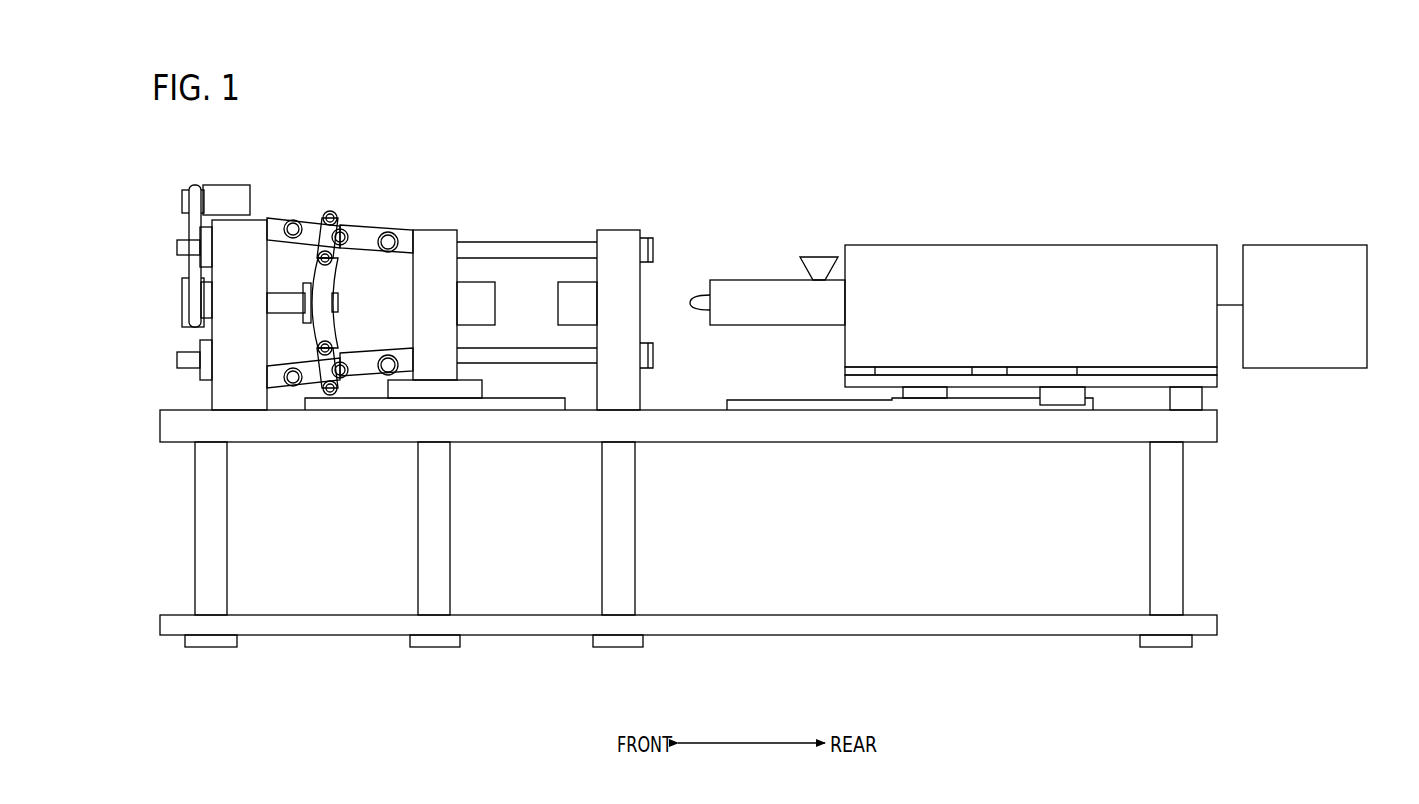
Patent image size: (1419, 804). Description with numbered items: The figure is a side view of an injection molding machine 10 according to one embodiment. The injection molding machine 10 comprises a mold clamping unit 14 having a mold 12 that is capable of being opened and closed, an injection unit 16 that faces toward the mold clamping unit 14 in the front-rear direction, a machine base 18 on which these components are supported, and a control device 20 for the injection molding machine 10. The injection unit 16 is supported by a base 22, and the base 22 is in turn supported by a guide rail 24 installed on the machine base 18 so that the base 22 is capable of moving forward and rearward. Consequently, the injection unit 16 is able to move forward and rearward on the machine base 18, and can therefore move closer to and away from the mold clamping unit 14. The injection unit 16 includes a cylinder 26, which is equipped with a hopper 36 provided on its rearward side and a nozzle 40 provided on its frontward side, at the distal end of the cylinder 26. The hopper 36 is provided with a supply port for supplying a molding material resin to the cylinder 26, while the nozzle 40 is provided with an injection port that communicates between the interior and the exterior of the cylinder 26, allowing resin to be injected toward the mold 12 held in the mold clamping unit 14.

The injection molding machine 10 is at (395, 131).
The mold 12 is at (485, 305).
The mold clamping unit 14 is at (432, 229).
The injection unit 16 is at (1093, 244).
The machine base 18 is at (175, 396).
The control device 20 is at (1325, 244).
The base 22 is at (1210, 382).
The guide rail 24 is at (779, 399).
The cylinder 26 is at (743, 279).
The hopper 36 is at (814, 255).
The nozzle 40 is at (697, 308).